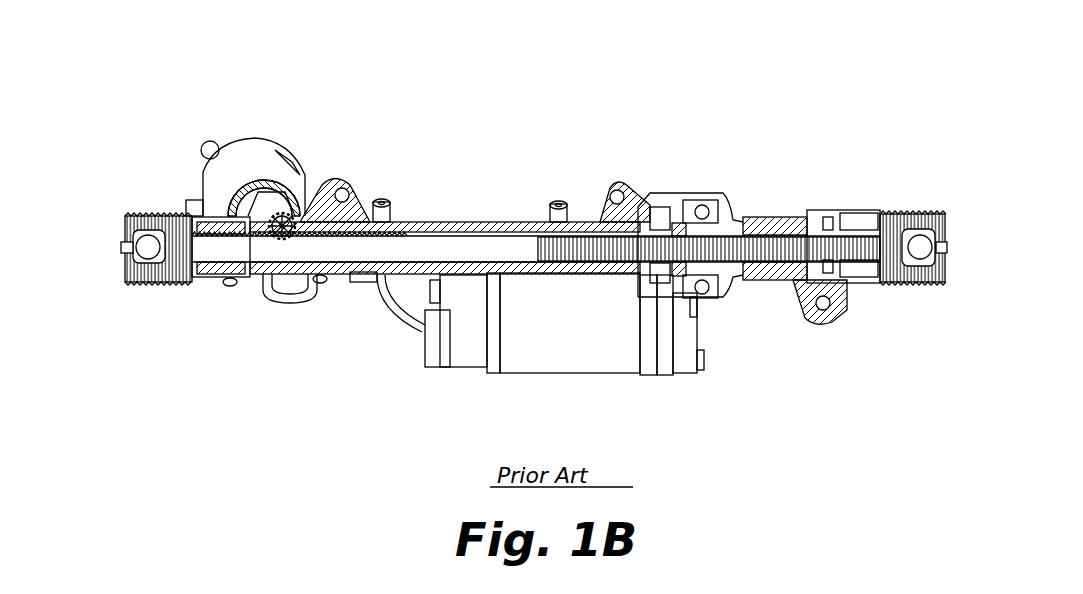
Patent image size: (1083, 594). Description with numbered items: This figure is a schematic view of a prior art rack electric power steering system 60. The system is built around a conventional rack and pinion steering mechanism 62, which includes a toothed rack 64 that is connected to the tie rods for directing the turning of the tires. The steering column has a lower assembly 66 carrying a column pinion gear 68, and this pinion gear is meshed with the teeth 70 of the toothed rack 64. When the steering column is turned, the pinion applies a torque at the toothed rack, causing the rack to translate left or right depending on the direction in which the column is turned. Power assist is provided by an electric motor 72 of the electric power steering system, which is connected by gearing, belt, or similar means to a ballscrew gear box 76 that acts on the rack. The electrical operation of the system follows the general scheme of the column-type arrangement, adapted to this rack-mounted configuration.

The rack electric power steering system 60 is at (562, 128).
The rack and pinion steering mechanism 62 is at (867, 192).
The toothed rack 64 is at (505, 233).
The lower assembly 66 is at (256, 160).
The column pinion gear 68 is at (278, 232).
The teeth 70 is at (388, 236).
The electric motor 72 is at (523, 374).
The ballscrew gear box 76 is at (723, 305).